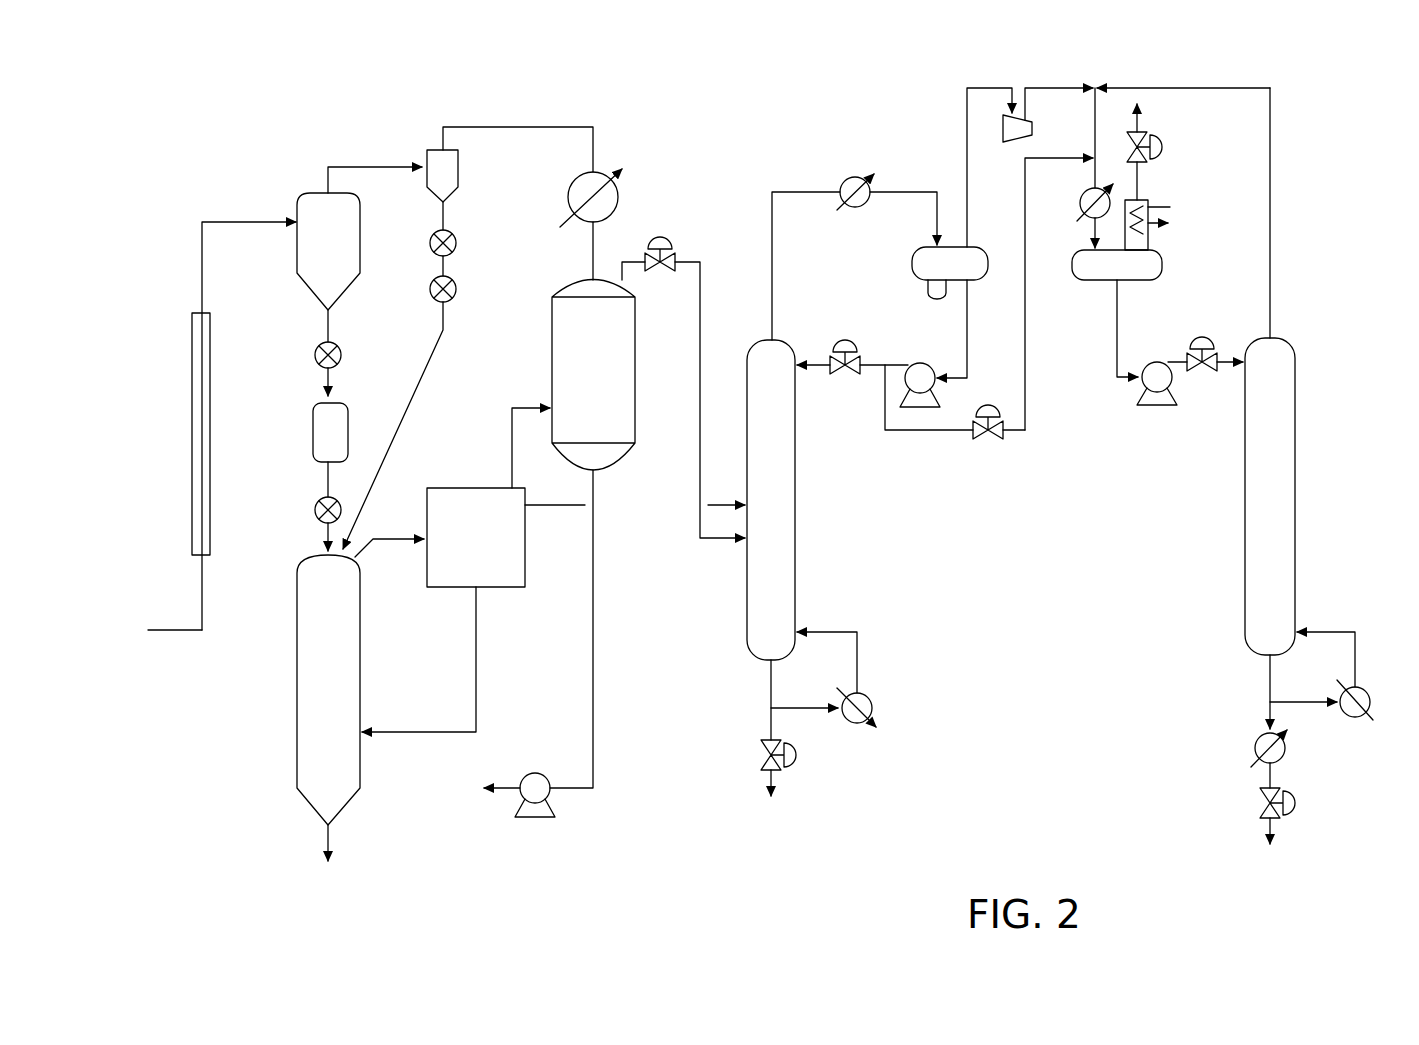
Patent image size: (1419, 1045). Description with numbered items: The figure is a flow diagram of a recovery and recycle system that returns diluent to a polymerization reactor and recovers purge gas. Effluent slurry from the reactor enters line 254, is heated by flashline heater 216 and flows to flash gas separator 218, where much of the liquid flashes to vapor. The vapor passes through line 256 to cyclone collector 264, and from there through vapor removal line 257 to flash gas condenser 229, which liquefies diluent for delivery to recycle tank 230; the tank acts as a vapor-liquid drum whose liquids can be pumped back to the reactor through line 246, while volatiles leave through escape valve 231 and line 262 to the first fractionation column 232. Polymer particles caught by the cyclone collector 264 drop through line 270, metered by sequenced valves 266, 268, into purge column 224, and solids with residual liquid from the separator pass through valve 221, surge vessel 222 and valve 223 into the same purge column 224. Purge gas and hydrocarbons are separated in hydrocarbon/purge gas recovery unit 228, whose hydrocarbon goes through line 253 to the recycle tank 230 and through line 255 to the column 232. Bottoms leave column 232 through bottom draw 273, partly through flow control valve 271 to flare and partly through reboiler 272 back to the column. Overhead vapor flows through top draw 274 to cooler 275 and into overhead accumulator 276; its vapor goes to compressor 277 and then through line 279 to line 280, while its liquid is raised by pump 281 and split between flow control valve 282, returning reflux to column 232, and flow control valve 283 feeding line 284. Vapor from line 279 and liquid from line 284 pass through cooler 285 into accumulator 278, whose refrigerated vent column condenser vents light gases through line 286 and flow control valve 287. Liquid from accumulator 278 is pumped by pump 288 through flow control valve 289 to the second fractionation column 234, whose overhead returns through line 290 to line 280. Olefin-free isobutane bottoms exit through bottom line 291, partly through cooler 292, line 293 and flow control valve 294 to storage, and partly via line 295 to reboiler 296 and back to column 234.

The flashline heater 216 is at (208, 426).
The flash gas separator 218 is at (302, 240).
The valve 221 is at (301, 353).
The surge vessel 222 is at (294, 449).
The valve 223 is at (298, 511).
The purge column 224 is at (327, 700).
The hydrocarbon/purge gas recovery unit 228 is at (443, 592).
The flash gas condenser 229 is at (622, 224).
The recycle tank 230 is at (557, 375).
The escape valve 231 is at (678, 245).
The first fractionation column 232 is at (733, 500).
The second fractionation column 234 is at (1236, 496).
The line 246 is at (559, 648).
The line 253 is at (497, 448).
The flashline 254 is at (182, 654).
The line 255 is at (635, 532).
The line 256 is at (368, 162).
The vapor removal line 257 is at (518, 130).
The line 262 is at (695, 400).
The cyclone collector 264 is at (476, 170).
The valve 266 is at (468, 228).
The valve 268 is at (468, 275).
The line 270 is at (419, 425).
The flow control valve 271 is at (809, 768).
The heater (reboiler) 272 is at (848, 679).
The bottom draw 273 is at (729, 700).
The top draw 274 is at (806, 266).
The cooler 275 is at (861, 191).
The overhead accumulator 276 is at (913, 273).
The compressor 277 is at (1030, 167).
The overhead accumulator 278 is at (1101, 280).
The line 279 is at (1158, 70).
The line 280 is at (1067, 138).
The pump 281 is at (920, 343).
The flow control valve 282 is at (845, 335).
The flow control valve 283 is at (964, 420).
The line 284 is at (1060, 294).
The cooler 285 is at (1073, 207).
The line 286 is at (1170, 204).
The flow control valve 287 is at (1175, 133).
The pump 288 is at (1123, 353).
The flow control valve 289 is at (1213, 386).
The line 290 is at (1301, 213).
The bottom line 291 is at (1232, 692).
The cooler 292 is at (1239, 752).
The line 293 is at (1233, 839).
The flow control valve 294 is at (1308, 809).
The line 295 is at (1336, 728).
The heater (reboiler) 296 is at (1344, 676).